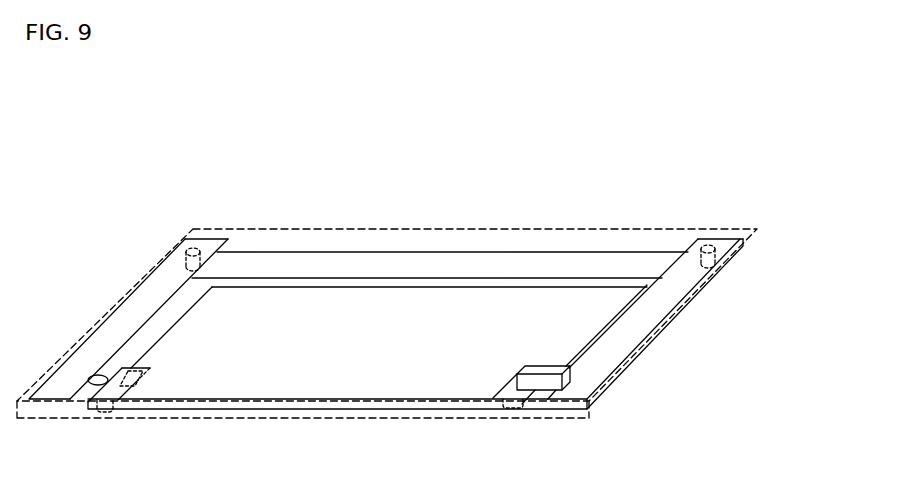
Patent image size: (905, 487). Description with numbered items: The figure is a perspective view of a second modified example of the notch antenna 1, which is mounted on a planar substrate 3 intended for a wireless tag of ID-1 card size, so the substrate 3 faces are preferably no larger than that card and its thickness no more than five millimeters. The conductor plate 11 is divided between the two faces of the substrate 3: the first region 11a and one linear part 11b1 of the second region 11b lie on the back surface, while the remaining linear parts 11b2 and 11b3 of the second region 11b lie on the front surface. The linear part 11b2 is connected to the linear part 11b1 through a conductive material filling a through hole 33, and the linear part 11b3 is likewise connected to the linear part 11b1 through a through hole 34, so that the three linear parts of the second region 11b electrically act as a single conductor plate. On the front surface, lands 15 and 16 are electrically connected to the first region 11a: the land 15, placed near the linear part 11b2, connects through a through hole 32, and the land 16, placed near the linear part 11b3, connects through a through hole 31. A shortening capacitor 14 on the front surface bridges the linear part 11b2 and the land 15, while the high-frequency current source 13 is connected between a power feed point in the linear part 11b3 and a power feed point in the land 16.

The notch antenna 1 is at (553, 180).
The substrate 3 is at (652, 338).
The conductor plate 11 is at (445, 193).
The first region 11a is at (363, 300).
The second region 11b is at (431, 262).
The linear part 11b1 is at (602, 258).
The linear part 11b2 is at (672, 300).
The linear part 11b3 is at (137, 302).
The high-frequency current source 13 is at (93, 373).
The shortening capacitor 14 is at (553, 392).
The land 15 is at (513, 388).
The land 16 is at (142, 376).
The through hole 31 is at (102, 412).
The through hole 32 is at (511, 406).
The through hole 33 is at (712, 238).
The through hole 34 is at (195, 238).